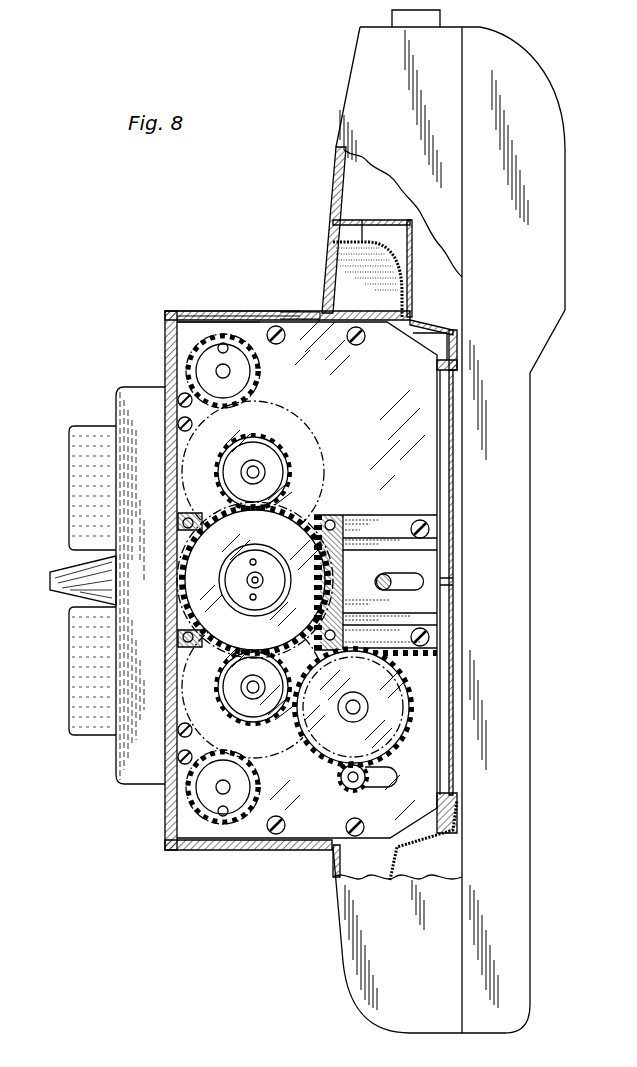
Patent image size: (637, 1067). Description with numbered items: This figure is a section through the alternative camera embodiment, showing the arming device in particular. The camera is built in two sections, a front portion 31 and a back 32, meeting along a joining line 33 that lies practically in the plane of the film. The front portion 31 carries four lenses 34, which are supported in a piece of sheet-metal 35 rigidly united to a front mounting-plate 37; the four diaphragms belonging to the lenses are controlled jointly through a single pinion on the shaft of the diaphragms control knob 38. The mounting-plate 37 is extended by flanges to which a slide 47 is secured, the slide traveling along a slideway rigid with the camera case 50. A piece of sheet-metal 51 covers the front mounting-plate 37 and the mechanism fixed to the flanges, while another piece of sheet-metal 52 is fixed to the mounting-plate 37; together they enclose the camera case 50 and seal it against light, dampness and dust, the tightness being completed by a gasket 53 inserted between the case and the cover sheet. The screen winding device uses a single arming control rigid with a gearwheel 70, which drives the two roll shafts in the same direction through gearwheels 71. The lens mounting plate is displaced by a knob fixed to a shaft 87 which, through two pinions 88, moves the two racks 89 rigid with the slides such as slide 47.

The front portion 31 is at (357, 67).
The back 32 is at (540, 97).
The parting line 33 is at (463, 72).
The lenses 34 is at (78, 452).
The piece of sheet-metal 35 is at (118, 391).
The front mounting-plate 37 is at (167, 351).
The diaphragms control knob 38 is at (53, 568).
The slide 47 is at (424, 602).
The camera case 50 is at (253, 311).
The piece of sheet-metal 51 is at (218, 311).
The piece of sheet-metal 52 is at (195, 311).
The gasket 53 is at (295, 311).
The gearwheel 70 is at (313, 507).
The gearwheels 71 is at (273, 443).
The shaft 87 is at (346, 786).
The pinions 88 is at (380, 730).
The racks 89 is at (404, 670).